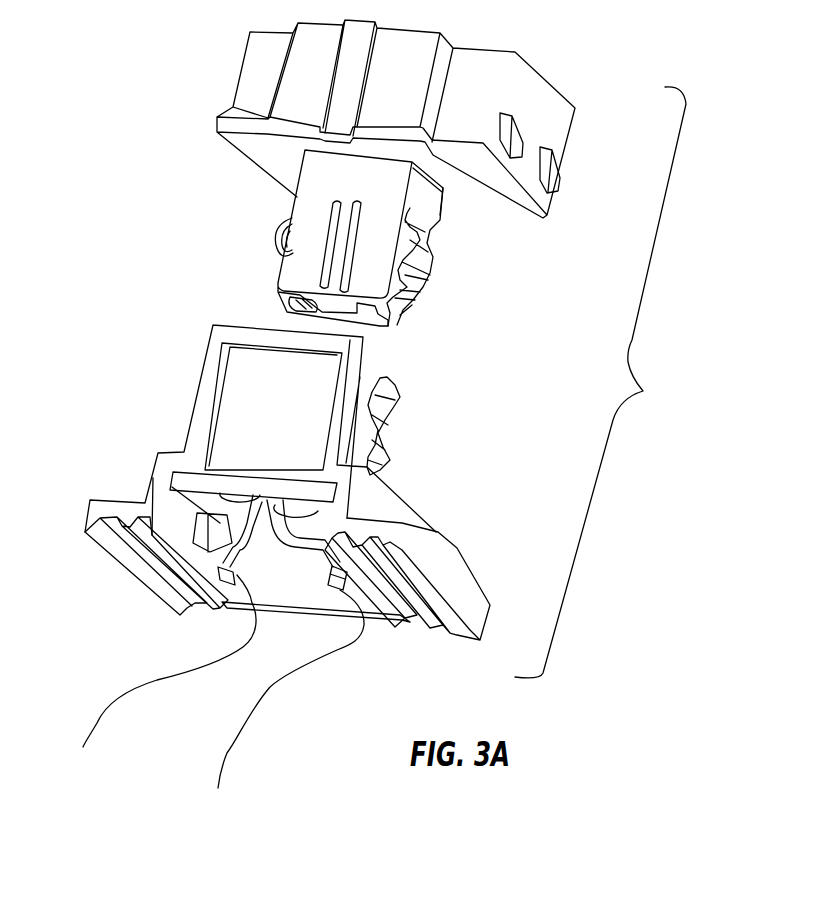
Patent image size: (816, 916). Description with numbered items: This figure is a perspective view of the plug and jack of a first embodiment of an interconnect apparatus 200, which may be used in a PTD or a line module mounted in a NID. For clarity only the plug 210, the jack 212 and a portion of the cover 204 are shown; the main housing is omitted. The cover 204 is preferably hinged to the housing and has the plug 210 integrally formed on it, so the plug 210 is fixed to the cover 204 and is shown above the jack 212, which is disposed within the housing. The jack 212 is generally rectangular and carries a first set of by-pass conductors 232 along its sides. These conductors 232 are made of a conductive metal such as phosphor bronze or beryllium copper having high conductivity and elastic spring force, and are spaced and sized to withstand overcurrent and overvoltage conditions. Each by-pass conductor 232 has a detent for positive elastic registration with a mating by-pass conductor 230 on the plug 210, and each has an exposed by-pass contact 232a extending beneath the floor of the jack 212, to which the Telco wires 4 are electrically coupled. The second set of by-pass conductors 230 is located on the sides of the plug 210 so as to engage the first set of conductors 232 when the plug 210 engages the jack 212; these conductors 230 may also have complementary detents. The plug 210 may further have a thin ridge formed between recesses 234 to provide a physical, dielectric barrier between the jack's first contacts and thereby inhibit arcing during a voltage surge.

The interconnect apparatus 200 is at (606, 382).
The cover 204 is at (580, 91).
The plug 210 is at (328, 182).
The jack 212 is at (182, 400).
The second set of by-pass conductors 230 is at (282, 222).
The first set of by-pass conductors 232 is at (395, 388).
The by-pass contact 232a is at (327, 565).
The recesses 234 is at (335, 280).
The Telco wires 4 is at (118, 702).